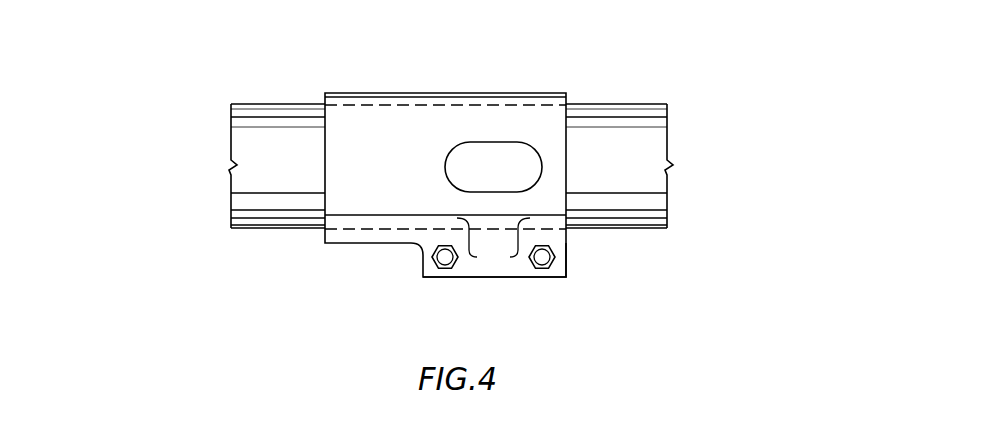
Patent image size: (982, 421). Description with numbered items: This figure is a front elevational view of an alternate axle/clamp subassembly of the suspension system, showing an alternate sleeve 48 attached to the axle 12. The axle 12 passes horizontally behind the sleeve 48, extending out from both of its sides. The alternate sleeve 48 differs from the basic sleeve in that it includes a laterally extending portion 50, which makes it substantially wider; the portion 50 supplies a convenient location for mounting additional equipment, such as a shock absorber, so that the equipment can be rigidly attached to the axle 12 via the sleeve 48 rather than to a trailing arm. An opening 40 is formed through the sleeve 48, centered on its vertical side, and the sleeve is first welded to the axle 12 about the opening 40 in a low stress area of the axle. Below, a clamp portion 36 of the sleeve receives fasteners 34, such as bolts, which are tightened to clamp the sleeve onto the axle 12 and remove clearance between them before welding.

The axle 12 is at (632, 103).
The alternate sleeve 48 is at (388, 92).
The openings 40 is at (492, 148).
The laterally extending portion 50 is at (365, 190).
The fasteners 34 is at (542, 269).
The clamp portion 36 is at (566, 259).